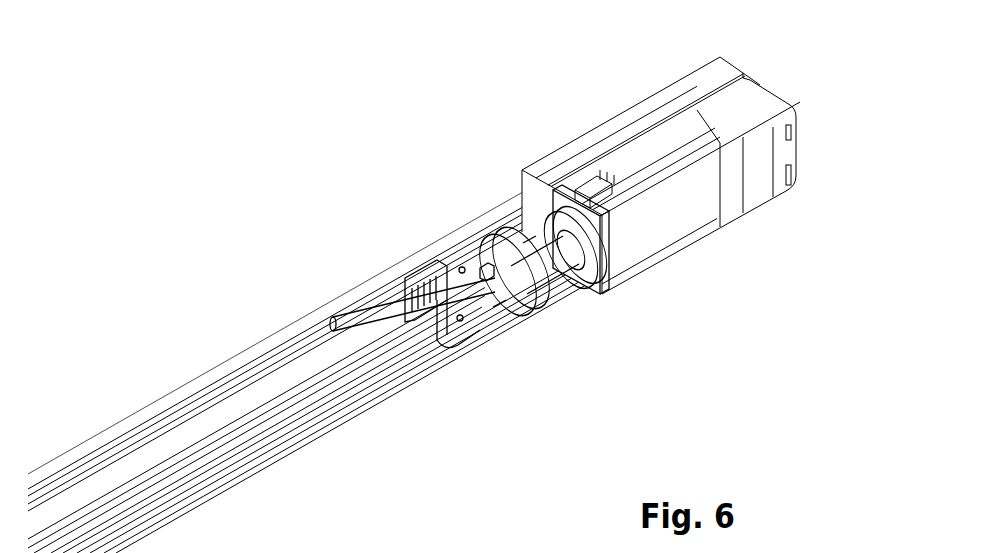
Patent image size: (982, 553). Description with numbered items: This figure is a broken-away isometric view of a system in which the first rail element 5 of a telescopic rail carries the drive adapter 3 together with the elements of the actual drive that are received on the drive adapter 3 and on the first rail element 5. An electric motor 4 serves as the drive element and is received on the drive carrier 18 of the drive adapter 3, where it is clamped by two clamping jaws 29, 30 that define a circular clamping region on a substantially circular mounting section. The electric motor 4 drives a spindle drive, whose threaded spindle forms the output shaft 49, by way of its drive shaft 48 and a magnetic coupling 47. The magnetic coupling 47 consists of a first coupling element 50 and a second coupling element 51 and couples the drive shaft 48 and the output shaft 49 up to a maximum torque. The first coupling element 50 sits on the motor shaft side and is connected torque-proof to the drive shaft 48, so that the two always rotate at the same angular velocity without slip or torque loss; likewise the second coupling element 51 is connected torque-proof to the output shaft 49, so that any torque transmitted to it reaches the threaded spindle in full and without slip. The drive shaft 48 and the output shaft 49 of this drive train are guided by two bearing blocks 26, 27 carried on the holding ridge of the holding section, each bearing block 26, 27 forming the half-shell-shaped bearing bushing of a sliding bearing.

The drive adapter 3 is at (763, 59).
The electric motor 4 is at (652, 158).
The first rail element 5 is at (187, 430).
The drive carrier 18 is at (412, 415).
The bearing block 26 is at (487, 267).
The bearing block 27 is at (488, 297).
The clamping jaw 29 is at (593, 223).
The clamping jaw 30 is at (590, 280).
The magnetic coupling 47 is at (500, 220).
The drive shaft 48 is at (547, 245).
The output shaft 49 is at (253, 417).
The first coupling element 50 is at (525, 273).
The second coupling element 51 is at (497, 257).